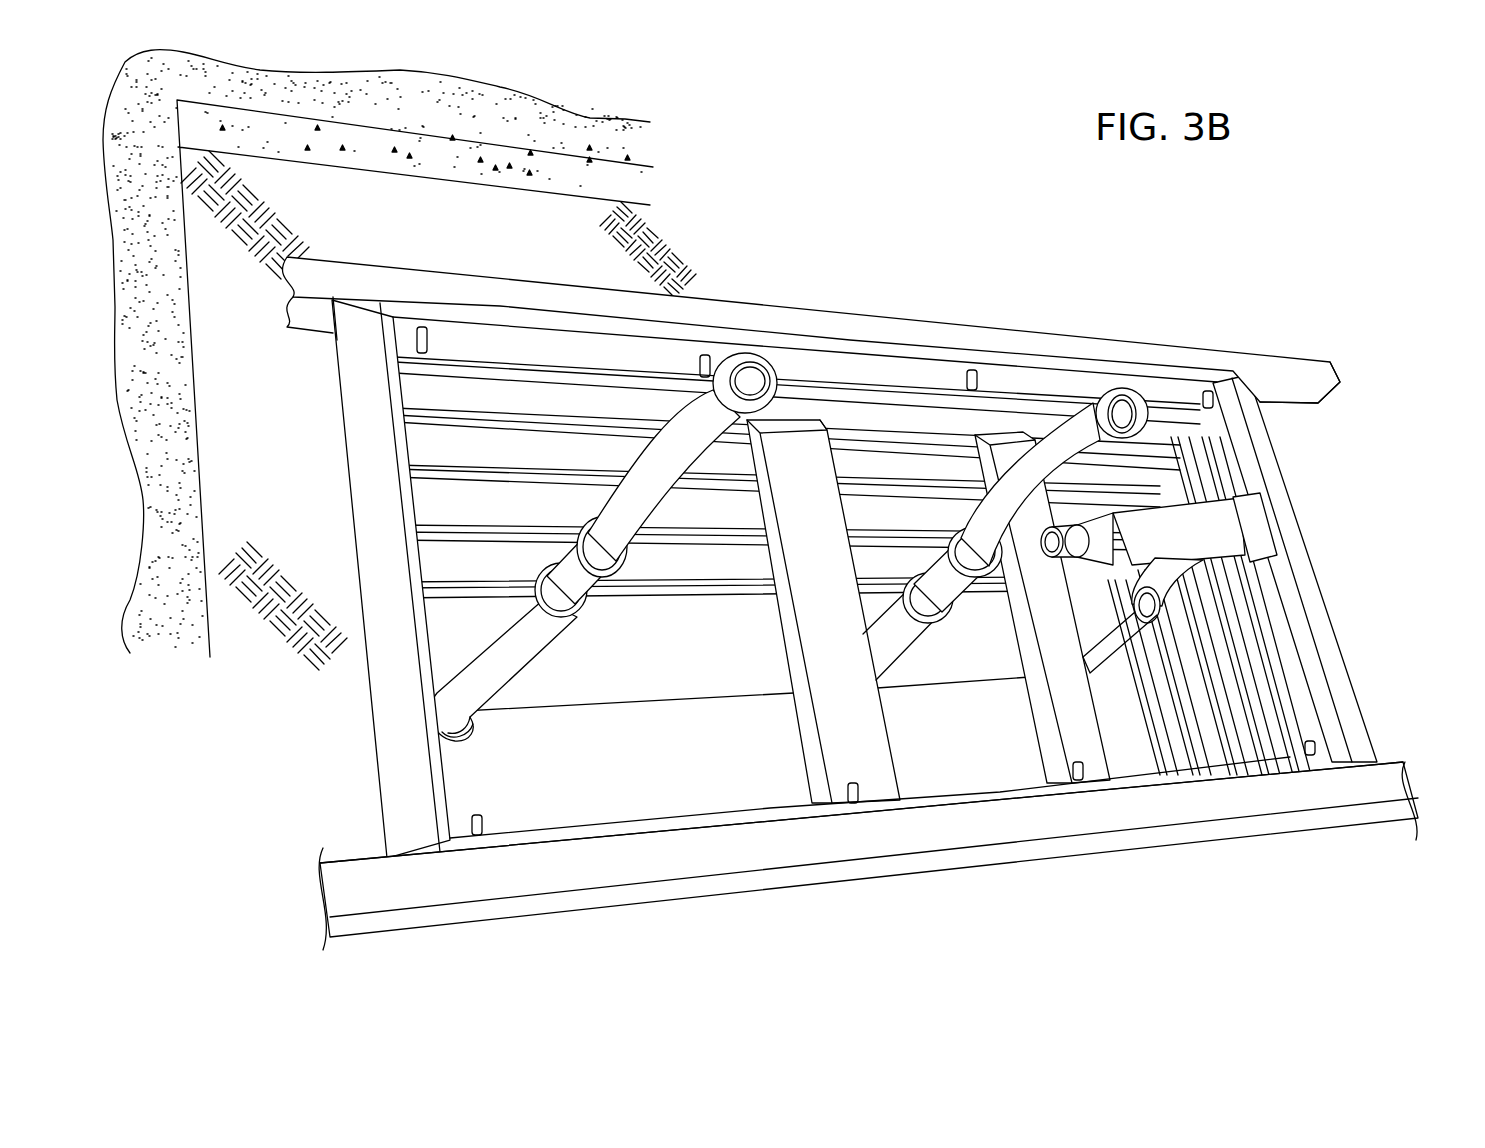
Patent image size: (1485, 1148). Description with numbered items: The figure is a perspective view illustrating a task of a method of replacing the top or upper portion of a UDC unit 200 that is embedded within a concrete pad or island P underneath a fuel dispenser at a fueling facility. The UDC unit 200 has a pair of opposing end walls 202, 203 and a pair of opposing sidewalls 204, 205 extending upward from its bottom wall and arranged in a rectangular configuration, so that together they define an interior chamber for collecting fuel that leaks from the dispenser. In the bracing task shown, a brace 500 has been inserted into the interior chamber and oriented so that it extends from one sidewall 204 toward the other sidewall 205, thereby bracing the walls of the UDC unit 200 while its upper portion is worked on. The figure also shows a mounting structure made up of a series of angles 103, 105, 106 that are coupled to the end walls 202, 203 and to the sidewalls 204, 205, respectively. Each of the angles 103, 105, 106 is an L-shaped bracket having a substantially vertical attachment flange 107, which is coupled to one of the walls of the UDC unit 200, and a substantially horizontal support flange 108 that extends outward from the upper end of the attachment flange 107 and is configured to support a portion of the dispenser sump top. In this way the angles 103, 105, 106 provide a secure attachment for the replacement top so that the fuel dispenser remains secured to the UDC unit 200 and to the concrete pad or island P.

The concrete pad or island P is at (473, 102).
The angle 103 is at (393, 720).
The angle 105 is at (832, 858).
The angle 106 is at (841, 330).
The attachment flange 107 is at (1240, 383).
The support flange 108 is at (493, 343).
The UDC unit 200 is at (831, 583).
The end wall 202 is at (437, 770).
The end wall 203 is at (1297, 617).
The sidewall 204 is at (997, 788).
The sidewall 205 is at (560, 323).
The brace 500 is at (790, 450).